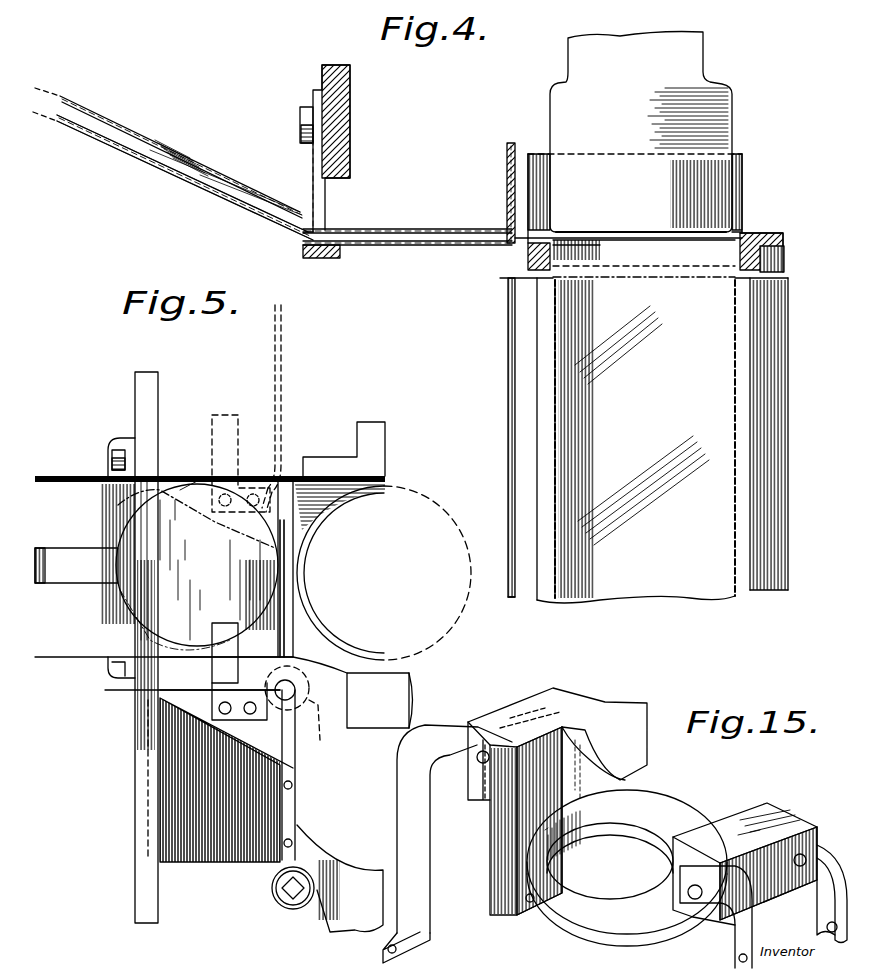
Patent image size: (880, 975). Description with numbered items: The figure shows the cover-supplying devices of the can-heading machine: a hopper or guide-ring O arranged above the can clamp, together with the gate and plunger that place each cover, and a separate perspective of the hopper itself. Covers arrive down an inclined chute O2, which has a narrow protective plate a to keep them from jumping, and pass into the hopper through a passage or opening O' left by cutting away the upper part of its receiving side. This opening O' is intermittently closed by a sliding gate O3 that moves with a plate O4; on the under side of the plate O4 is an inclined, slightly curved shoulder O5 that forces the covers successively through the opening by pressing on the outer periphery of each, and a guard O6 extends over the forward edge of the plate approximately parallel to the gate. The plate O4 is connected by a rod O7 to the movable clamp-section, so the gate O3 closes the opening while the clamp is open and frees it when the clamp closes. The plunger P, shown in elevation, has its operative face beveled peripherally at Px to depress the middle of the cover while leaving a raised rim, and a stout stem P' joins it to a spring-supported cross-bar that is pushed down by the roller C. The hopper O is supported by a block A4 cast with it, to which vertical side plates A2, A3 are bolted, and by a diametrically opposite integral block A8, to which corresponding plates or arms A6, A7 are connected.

In FIG. 4, the hopper or guide-ring O is at (413, 180).
In FIG. 5, the hopper or guide-ring O is at (344, 449).
In FIG. 15, the hopper or guide-ring O is at (627, 875).
In FIG. 4, the passage or opening O' is at (602, 245).
In FIG. 5, the passage or opening O' is at (382, 606).
In FIG. 15, the passage or opening O' is at (498, 870).
In FIG. 4, the chute O2 is at (230, 204).
In FIG. 5, the chute O2 is at (66, 476).
In FIG. 4, the sliding gate O3 is at (507, 195).
In FIG. 5, the sliding gate O3 is at (281, 368).
In FIG. 5, the plate O4 is at (263, 788).
In FIG. 5, the shoulder O5 is at (303, 442).
In FIG. 5, the guard O6 is at (226, 416).
In FIG. 5, the rod O7 is at (293, 828).
In FIG. 4, the plunger P is at (635, 198).
In FIG. 4, the stem P' is at (655, 132).
In FIG. 4, the beveled operative face Px is at (722, 231).
In FIG. 4, the roller C is at (780, 452).
In FIG. 5, the arm a is at (76, 565).
In FIG. 15, the vertical side plate A2 is at (828, 862).
In FIG. 15, the vertical side plate A3 is at (722, 925).
In FIG. 15, the block A4 is at (754, 869).
In FIG. 15, the plate or arm A6 is at (518, 705).
In FIG. 15, the plate or arm A7 is at (432, 862).
In FIG. 15, the block A8 is at (512, 720).